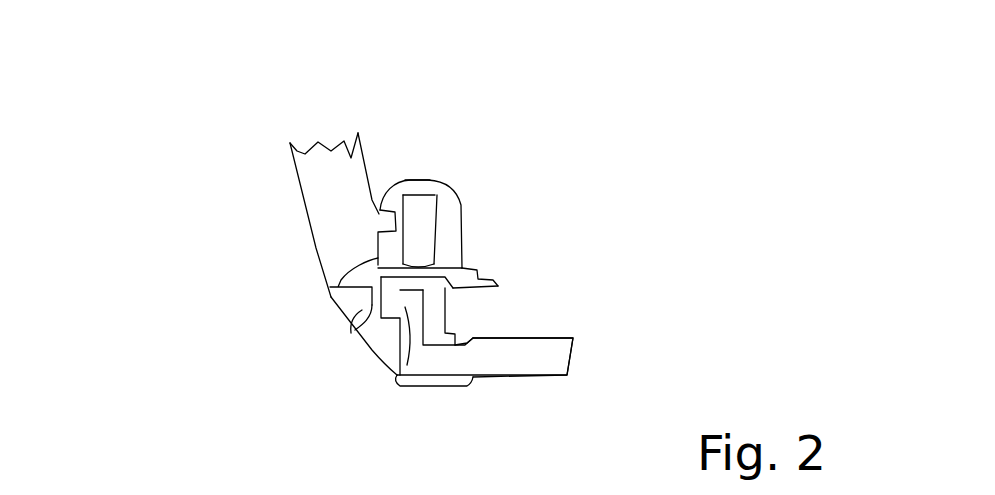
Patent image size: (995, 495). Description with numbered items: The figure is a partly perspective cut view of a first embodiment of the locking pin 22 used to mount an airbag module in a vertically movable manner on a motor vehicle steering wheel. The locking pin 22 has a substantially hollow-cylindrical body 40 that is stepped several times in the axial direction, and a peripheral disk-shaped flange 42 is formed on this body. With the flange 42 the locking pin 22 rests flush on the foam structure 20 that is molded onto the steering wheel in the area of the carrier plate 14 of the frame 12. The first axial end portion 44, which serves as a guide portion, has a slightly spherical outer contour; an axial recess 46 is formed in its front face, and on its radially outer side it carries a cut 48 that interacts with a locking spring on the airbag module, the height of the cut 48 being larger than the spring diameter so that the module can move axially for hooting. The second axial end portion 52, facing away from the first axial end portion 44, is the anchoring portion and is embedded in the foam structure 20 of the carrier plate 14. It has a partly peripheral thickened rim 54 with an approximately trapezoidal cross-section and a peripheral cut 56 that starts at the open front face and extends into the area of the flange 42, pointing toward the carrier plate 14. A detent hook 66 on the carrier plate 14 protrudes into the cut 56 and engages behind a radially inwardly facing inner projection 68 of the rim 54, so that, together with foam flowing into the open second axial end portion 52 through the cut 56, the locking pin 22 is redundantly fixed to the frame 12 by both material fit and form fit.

The frame 12 is at (514, 407).
The carrier plate 14 is at (520, 355).
The foam structure 20 is at (305, 153).
The locking pin 22 is at (551, 153).
The hollow-cylindrical body 40 is at (467, 248).
The flange 42 is at (355, 328).
The first axial end portion 44 is at (472, 213).
The axial recess 46 is at (423, 185).
The cut 48 is at (392, 218).
The second axial end portion 52 is at (492, 317).
The thickened rim 54 is at (356, 332).
The peripheral cut 56 is at (460, 306).
The detent hook 66 is at (397, 376).
The inner projection 68 is at (398, 335).